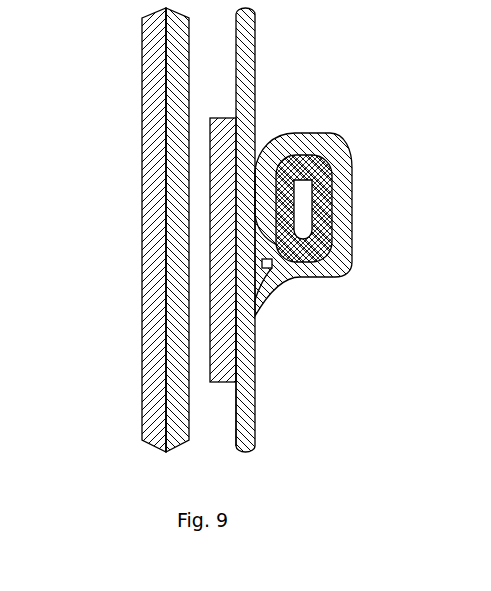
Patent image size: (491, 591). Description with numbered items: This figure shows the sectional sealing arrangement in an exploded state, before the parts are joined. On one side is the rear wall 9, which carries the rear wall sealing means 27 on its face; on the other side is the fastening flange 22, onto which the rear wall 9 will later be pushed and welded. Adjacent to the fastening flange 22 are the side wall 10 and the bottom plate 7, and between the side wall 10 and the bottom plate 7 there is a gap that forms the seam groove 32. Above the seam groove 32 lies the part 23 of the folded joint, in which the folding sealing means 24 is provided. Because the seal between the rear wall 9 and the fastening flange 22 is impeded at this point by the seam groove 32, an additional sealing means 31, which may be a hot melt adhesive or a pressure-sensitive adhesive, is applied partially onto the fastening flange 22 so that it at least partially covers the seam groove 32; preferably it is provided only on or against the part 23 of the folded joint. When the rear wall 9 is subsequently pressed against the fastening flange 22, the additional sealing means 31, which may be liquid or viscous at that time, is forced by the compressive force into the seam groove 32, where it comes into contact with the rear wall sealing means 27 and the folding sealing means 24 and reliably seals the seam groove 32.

The bottom plate 7 is at (254, 425).
The rear wall 9 is at (160, 230).
The side wall 10 is at (256, 48).
The fastening flange 22 is at (264, 366).
The part of the folded joint 23 is at (343, 254).
The folding sealing means 24 is at (343, 147).
The rear wall sealing means 27 is at (166, 96).
The additional sealing means 31 is at (252, 333).
The seam groove 32 is at (260, 272).